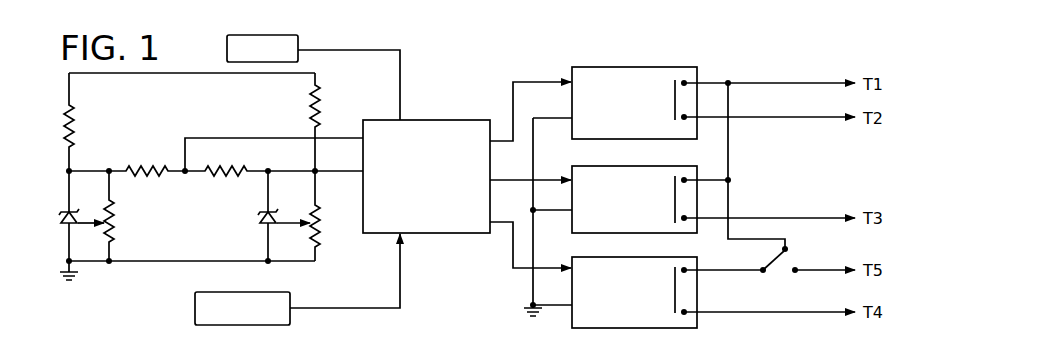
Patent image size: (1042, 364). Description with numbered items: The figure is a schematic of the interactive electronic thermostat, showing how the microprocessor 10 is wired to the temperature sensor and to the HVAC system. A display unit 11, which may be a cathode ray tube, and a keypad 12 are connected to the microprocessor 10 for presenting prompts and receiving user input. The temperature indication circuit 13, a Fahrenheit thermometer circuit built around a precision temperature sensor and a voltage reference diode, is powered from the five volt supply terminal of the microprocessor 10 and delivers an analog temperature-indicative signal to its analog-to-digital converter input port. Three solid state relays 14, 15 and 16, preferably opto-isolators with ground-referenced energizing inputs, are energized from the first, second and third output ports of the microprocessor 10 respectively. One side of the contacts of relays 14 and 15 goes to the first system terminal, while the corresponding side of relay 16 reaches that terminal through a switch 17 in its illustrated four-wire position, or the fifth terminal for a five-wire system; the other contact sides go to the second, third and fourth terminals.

The microprocessor 10 is at (440, 233).
The display unit 11 is at (227, 48).
The keypad 12 is at (282, 325).
The temperature indication circuit 13 is at (138, 267).
The solid state relay 14 is at (662, 67).
The solid state relay 15 is at (662, 166).
The solid state relay 16 is at (662, 257).
The switch 17 is at (776, 269).